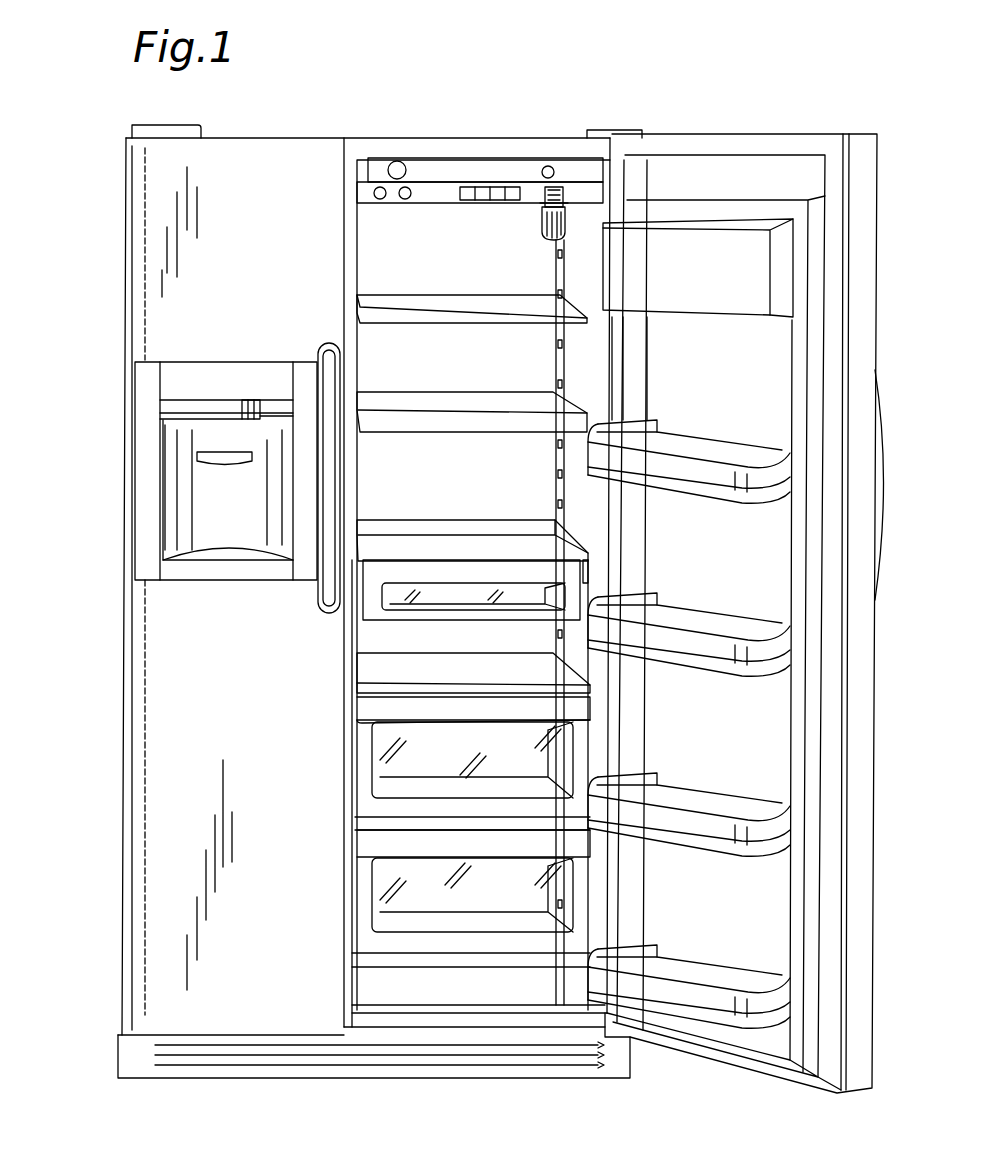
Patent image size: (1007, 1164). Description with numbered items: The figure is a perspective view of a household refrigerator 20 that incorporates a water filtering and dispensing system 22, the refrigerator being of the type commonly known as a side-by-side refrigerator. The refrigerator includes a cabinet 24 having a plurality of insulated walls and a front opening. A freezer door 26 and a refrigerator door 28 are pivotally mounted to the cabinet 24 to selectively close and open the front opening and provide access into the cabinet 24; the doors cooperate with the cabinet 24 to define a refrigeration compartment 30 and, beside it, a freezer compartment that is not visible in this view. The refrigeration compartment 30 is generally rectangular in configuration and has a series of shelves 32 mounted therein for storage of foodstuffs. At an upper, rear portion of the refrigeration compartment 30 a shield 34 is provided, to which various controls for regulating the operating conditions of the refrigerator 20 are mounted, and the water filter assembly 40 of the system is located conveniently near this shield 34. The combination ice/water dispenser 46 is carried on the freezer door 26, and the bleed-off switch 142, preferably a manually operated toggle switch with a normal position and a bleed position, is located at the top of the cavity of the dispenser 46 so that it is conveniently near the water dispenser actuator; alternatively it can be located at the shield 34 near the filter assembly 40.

The refrigerator 20 is at (331, 130).
The water filtering and dispensing system 22 is at (566, 214).
The cabinet 24 is at (563, 137).
The freezer door 26 is at (175, 956).
The refrigerator door 28 is at (873, 152).
The refrigeration compartment 30 is at (398, 247).
The shelves 32 is at (482, 313).
The shield 34 is at (523, 170).
The water filter assembly 40 is at (537, 227).
The combination ice/water dispenser 46 is at (205, 525).
The bleed-off switch 142 is at (183, 418).